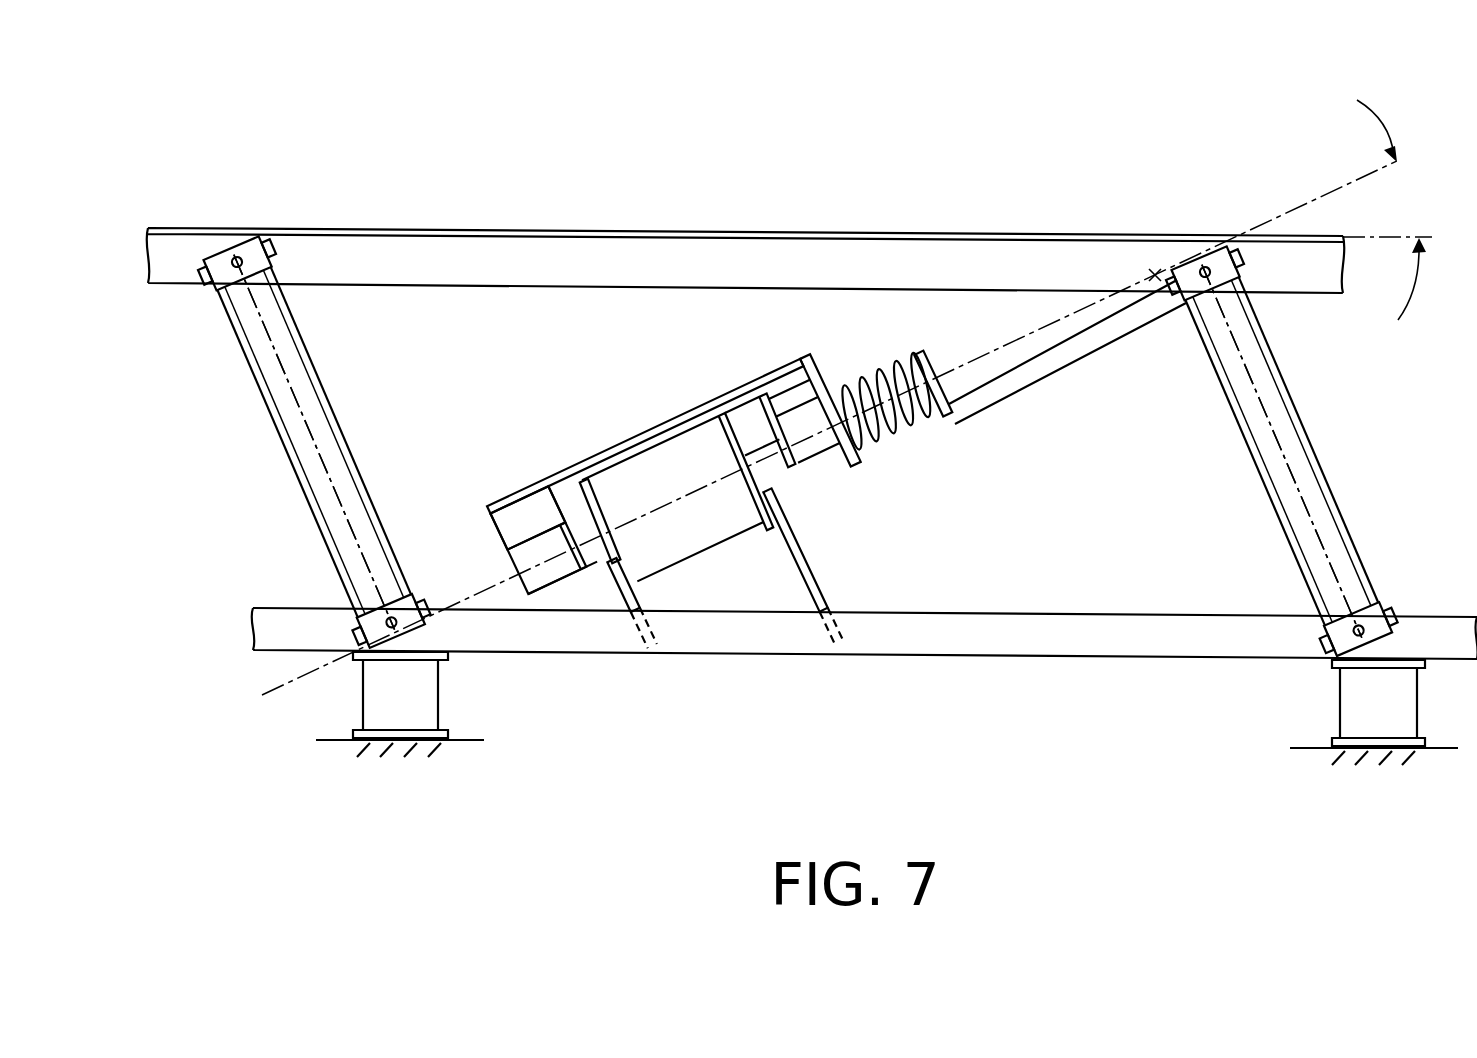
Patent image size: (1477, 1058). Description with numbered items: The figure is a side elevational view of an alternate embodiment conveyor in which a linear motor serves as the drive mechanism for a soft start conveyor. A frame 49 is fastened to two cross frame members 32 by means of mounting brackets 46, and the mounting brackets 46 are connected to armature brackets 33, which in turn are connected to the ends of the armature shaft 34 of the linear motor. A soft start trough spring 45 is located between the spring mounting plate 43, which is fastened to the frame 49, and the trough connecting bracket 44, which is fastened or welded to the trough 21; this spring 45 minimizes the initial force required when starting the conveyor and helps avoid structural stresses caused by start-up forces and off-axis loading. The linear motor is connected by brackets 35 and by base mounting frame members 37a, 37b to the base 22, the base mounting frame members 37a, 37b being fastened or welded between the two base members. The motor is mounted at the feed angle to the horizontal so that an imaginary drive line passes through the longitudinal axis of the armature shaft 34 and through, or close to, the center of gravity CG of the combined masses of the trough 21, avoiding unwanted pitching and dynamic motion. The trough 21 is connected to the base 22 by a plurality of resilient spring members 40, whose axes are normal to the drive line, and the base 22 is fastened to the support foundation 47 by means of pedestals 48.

The trough 21 is at (345, 229).
The base 22 is at (968, 608).
The cross frame members 32 is at (520, 560).
The armature brackets 33 is at (597, 562).
The armature shaft 34 is at (748, 440).
The brackets 35 is at (596, 487).
The base mounting frame member 37a is at (812, 573).
The base mounting frame member 37b is at (640, 600).
The resilient spring members 40 is at (308, 496).
The spring mounting plate 43 is at (817, 377).
The trough connecting bracket 44 is at (1040, 368).
The soft start trough spring 45 is at (893, 437).
The mounting brackets 46 is at (515, 515).
The support foundation 47 is at (380, 756).
The pedestals 48 is at (363, 702).
The frame 49 is at (658, 420).
The center of gravity CG is at (1152, 271).
The link axis A is at (286, 383).